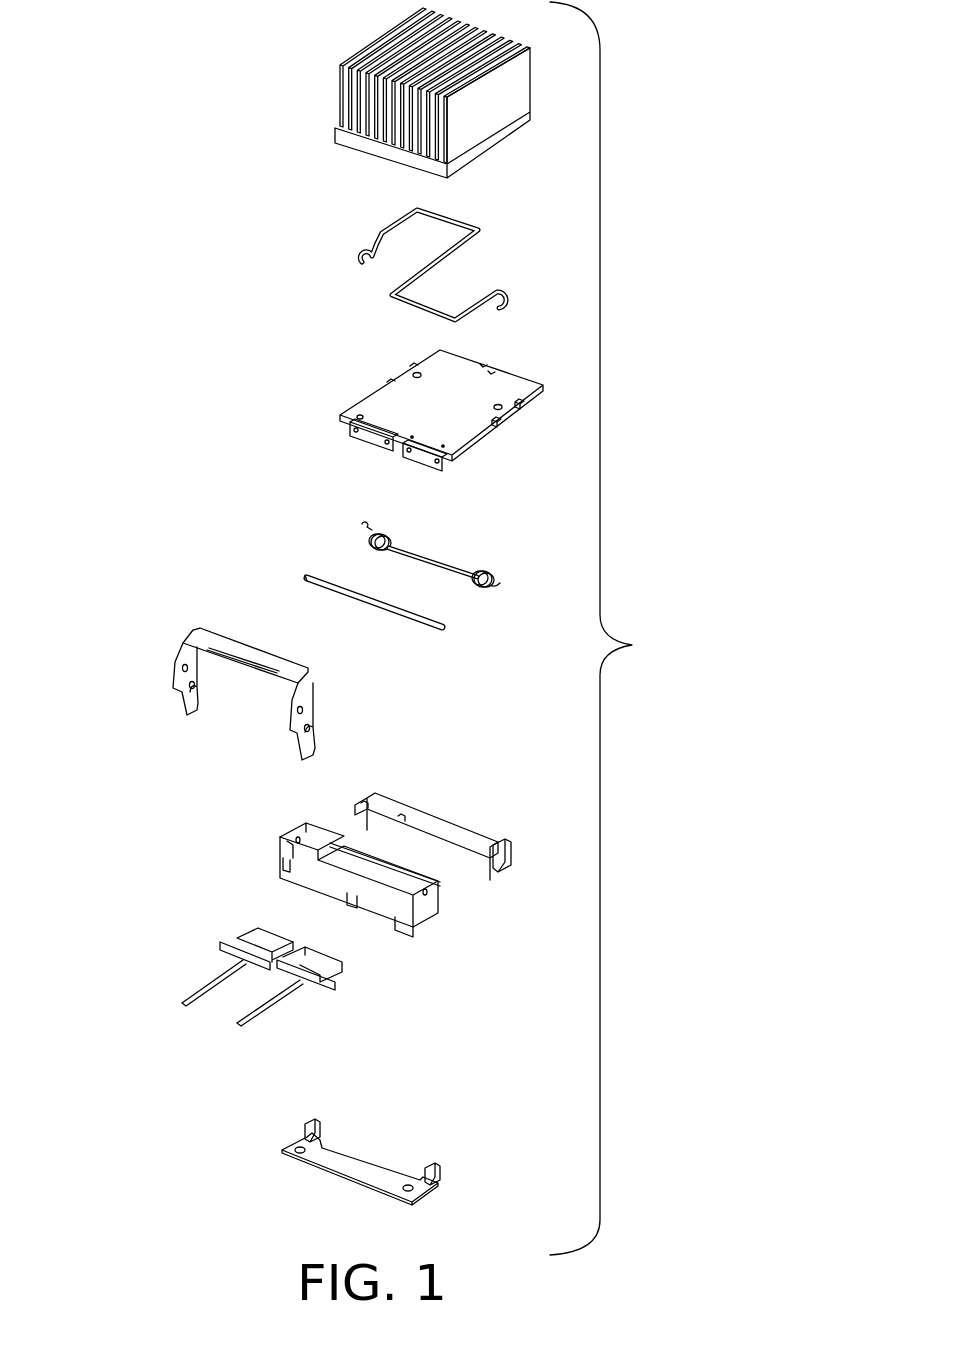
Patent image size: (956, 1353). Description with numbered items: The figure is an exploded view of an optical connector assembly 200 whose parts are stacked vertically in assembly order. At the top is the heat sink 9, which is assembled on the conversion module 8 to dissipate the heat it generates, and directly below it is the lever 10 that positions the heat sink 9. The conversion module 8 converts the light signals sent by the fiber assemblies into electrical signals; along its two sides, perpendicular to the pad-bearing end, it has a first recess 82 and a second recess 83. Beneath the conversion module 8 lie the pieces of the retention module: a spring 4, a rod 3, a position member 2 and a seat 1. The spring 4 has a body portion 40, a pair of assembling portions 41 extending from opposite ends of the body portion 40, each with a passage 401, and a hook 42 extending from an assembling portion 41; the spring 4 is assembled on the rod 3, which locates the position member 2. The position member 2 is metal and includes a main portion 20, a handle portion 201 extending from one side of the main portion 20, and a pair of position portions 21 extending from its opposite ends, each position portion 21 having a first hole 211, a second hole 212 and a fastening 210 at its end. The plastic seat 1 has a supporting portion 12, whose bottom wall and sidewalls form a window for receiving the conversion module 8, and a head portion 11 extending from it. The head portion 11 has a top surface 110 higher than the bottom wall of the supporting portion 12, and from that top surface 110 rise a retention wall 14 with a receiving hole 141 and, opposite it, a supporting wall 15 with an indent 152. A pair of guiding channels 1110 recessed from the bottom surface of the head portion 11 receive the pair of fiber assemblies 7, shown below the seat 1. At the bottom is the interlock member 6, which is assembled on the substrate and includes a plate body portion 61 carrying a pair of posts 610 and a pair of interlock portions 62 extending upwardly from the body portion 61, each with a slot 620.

The optical connector assembly 200 is at (634, 628).
The heat sink 9 is at (330, 34).
The lever 10 is at (345, 214).
The conversion module 8 is at (419, 422).
The first recess 82 is at (524, 408).
The second recess 83 is at (500, 426).
The spring 4 is at (415, 518).
The hook 42 is at (368, 524).
The assembling portion 41 is at (390, 534).
The body portion 40 is at (438, 560).
The passage 401 is at (497, 584).
The rod 3 is at (288, 562).
The position member 2 is at (227, 671).
The main portion 20 is at (245, 655).
The handle portion 201 is at (238, 665).
The position portion 21 is at (183, 690).
The first hole 211 is at (180, 671).
The fastening 210 is at (188, 712).
The second hole 212 is at (316, 733).
The seat 1 is at (361, 872).
The head portion 11 is at (436, 905).
The retention wall 14 is at (298, 822).
The receiving hole 141 is at (283, 860).
The supporting wall 15 is at (303, 878).
The indent 152 is at (333, 822).
The supporting portion 12 is at (460, 883).
The top surface 110 is at (352, 875).
The guiding channel 1110 is at (378, 906).
The fiber assembly 7 is at (183, 927).
The interlock member 6 is at (375, 1171).
The plate body portion 61 is at (362, 1172).
The interlock portion 62 is at (437, 1167).
The slot 620 is at (440, 1183).
The post 610 is at (410, 1200).